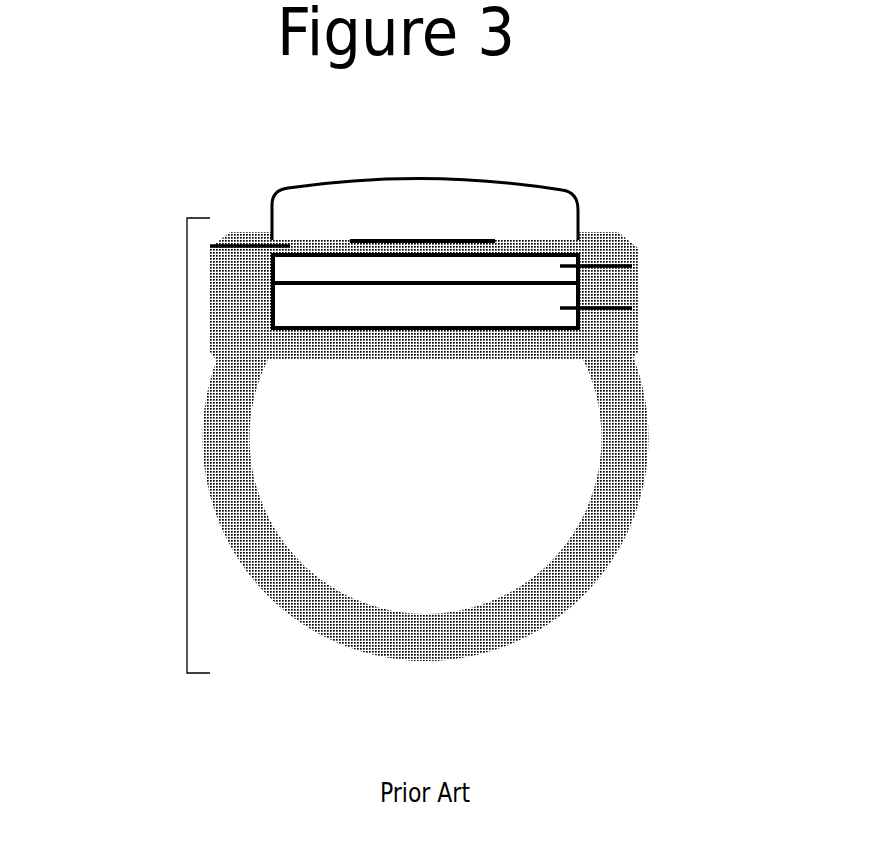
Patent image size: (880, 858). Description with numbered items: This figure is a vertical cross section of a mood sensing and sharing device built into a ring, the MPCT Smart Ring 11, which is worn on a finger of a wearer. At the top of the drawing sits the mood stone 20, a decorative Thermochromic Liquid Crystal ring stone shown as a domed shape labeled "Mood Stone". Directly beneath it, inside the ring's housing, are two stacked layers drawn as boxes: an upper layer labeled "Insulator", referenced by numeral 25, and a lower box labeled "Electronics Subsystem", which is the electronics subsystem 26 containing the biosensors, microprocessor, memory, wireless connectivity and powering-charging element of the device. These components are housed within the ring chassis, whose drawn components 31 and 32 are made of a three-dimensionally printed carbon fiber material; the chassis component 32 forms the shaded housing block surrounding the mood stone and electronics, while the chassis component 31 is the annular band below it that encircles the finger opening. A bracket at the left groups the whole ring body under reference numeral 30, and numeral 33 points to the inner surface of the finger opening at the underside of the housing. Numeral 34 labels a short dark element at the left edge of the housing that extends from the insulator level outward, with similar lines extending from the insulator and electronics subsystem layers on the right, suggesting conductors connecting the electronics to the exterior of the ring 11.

The MPCT Smart Ring 11 is at (167, 202).
The mood stone 20 is at (447, 172).
The insulator 25 is at (618, 275).
The electronics subsystem 26 is at (618, 317).
The ring band 30 is at (187, 445).
The chassis component 31 is at (515, 645).
The chassis component 32 is at (627, 243).
The inner surface of ring 33 is at (460, 360).
The electrode 34 is at (225, 258).